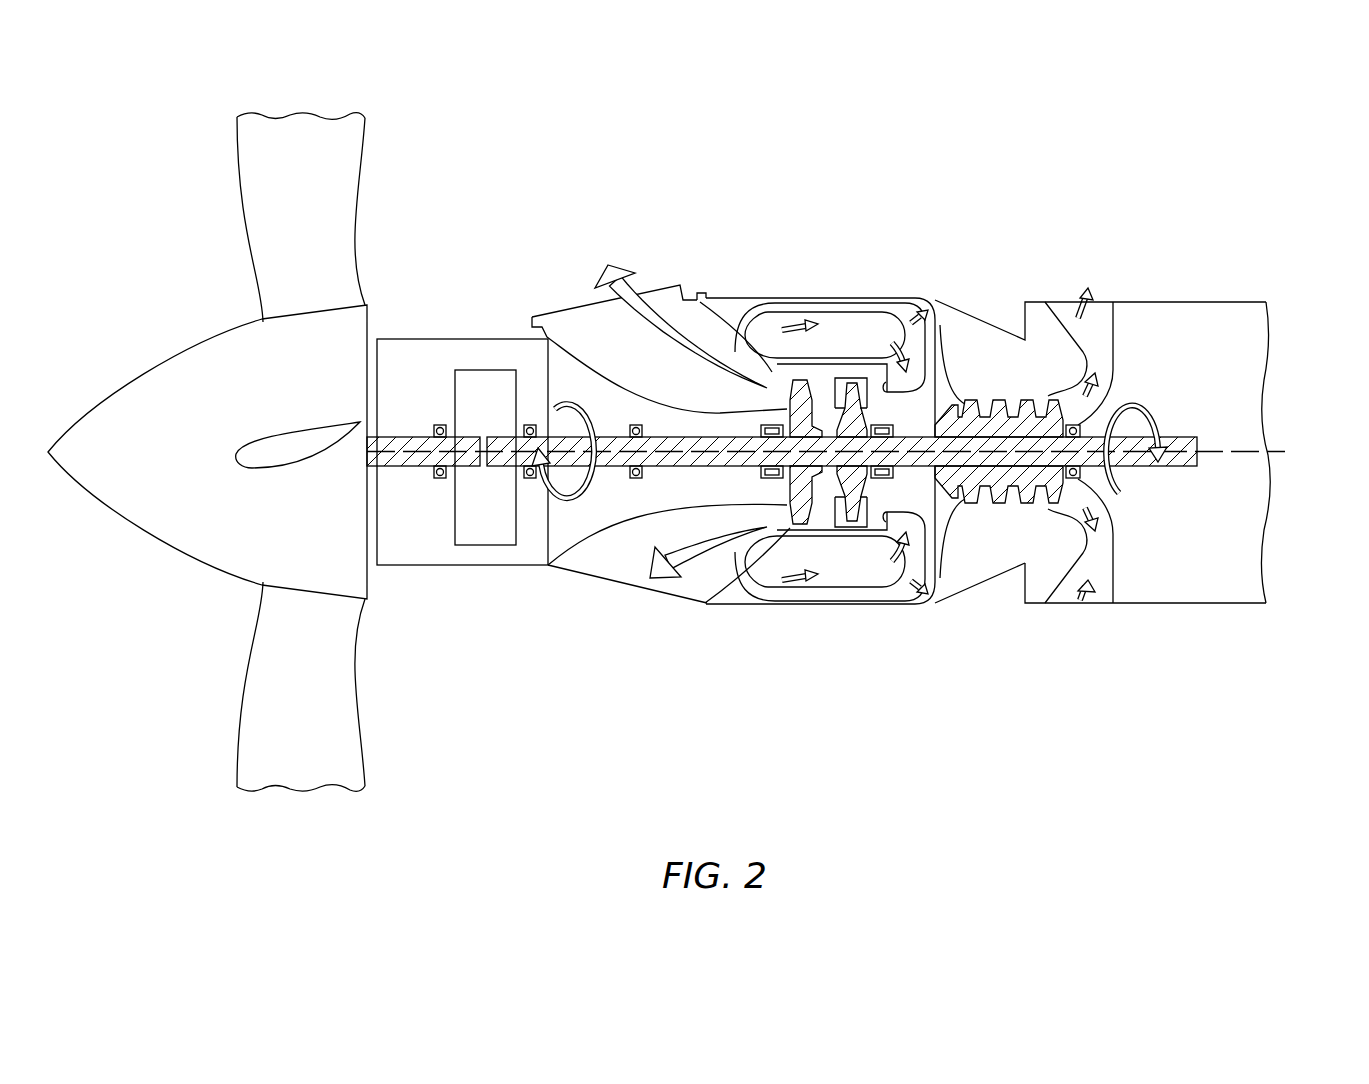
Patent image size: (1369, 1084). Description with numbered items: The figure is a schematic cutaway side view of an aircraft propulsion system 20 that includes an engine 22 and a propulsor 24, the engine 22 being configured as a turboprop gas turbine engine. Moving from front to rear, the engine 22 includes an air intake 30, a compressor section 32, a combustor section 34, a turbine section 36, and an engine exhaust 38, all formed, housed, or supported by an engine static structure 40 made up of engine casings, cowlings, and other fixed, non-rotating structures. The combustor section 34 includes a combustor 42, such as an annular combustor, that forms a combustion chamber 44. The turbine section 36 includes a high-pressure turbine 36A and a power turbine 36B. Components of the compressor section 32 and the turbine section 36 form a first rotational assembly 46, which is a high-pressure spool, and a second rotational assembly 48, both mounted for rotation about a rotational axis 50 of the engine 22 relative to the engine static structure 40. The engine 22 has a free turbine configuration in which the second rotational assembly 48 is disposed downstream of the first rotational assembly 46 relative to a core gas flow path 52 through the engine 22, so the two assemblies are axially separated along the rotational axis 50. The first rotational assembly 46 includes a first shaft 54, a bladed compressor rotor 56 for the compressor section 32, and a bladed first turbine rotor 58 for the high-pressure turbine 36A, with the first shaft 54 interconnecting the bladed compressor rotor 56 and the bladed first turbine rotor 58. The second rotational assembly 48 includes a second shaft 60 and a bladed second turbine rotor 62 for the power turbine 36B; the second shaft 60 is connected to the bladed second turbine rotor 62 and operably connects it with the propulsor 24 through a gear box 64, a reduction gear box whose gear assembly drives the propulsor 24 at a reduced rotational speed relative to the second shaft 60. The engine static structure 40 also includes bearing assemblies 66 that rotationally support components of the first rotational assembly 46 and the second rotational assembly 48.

The propulsion system 20 is at (1130, 176).
The engine 22 is at (1142, 330).
The propulsor 24 is at (168, 530).
The air intake 30 is at (1108, 316).
The compressor section 32 is at (1004, 508).
The combustor section 34 is at (866, 300).
The turbine section 36 is at (789, 532).
The high-pressure turbine 36A is at (852, 515).
The power turbine 36B is at (776, 378).
The engine exhaust 38 is at (678, 300).
The engine static structure 40 is at (503, 337).
The combustor 42 is at (824, 308).
The combustion chamber 44 is at (859, 344).
The first rotational assembly 46 is at (950, 400).
The second rotational assembly 48 is at (690, 473).
The rotational axis 50 is at (1230, 452).
The core gas flow path 52 is at (678, 333).
The first shaft 54 is at (898, 462).
The bladed compressor rotor 56 is at (958, 482).
The bladed first turbine rotor 58 is at (865, 518).
The second shaft 60 is at (710, 460).
The bladed second turbine rotor 62 is at (795, 515).
The gear box 64 is at (505, 427).
The bearing assemblies 66 is at (440, 424).